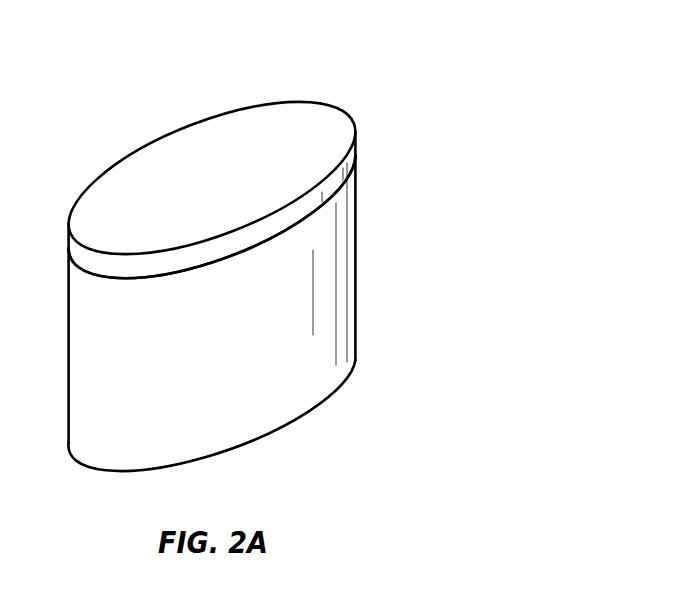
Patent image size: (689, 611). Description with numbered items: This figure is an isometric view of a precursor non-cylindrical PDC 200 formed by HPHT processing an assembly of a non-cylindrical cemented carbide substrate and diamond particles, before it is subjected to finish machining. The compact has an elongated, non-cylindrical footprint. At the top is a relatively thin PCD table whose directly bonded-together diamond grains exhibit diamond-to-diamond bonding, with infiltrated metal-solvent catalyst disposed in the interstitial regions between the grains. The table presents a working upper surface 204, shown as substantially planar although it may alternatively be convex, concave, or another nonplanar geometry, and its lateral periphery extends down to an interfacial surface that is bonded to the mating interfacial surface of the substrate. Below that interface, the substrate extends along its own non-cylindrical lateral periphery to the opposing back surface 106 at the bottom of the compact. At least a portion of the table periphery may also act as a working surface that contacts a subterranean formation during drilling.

The precursor non-cylindrical PDC 200 is at (420, 80).
The working upper surface 204 is at (285, 133).
The back surface 106 is at (318, 407).